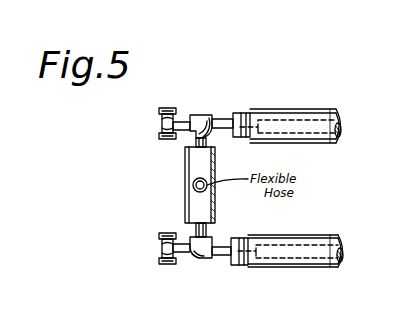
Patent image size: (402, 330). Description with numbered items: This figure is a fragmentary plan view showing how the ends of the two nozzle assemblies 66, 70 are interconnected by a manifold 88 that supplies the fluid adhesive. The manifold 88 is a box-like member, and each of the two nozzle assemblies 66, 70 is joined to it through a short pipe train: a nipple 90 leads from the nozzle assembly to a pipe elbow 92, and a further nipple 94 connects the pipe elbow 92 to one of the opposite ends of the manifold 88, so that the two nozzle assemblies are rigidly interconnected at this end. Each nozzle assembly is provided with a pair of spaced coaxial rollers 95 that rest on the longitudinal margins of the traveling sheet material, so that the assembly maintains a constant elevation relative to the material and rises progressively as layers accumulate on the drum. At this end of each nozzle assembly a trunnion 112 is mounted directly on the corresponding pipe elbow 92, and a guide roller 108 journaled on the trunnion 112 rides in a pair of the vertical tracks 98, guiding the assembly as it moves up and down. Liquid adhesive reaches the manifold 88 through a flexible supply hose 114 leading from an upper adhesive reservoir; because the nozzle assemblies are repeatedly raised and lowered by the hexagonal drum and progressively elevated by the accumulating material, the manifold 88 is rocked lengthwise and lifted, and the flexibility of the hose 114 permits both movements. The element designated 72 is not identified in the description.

The nozzle assembly 66 is at (292, 107).
The nozzle assembly 70 is at (282, 232).
The tube end cap 72 is at (322, 111).
The manifold 88 is at (205, 209).
The nipple 90 is at (220, 119).
The pipe elbow 92 is at (199, 118).
The nipple 94 is at (196, 142).
The roller 95 is at (243, 114).
The vertical track 98 is at (165, 109).
The guide roller 108 is at (161, 125).
The trunnion 112 is at (182, 122).
The flexible supply hose 114 is at (193, 187).